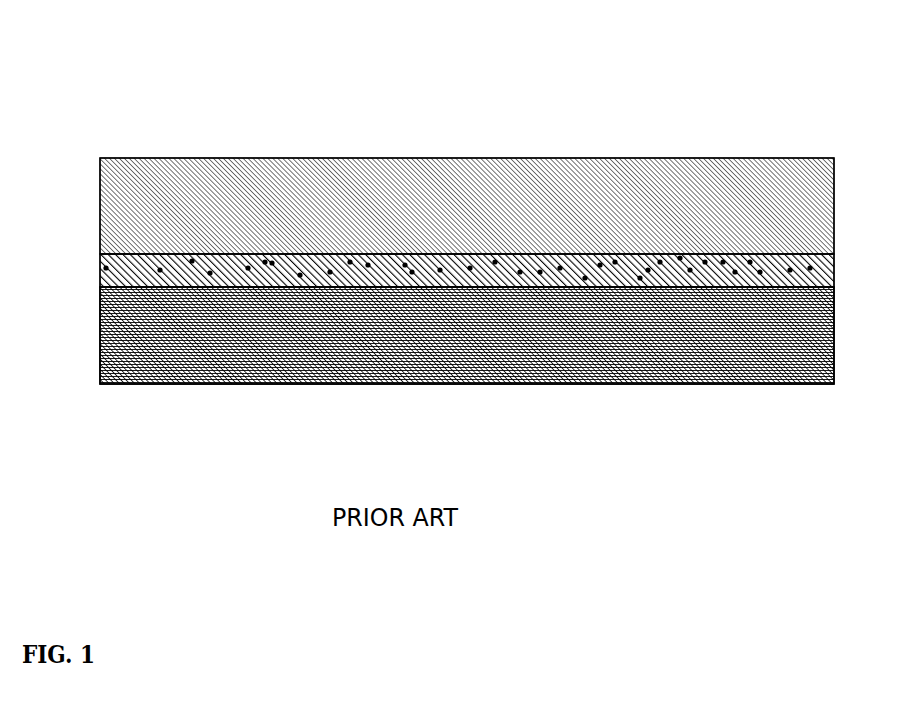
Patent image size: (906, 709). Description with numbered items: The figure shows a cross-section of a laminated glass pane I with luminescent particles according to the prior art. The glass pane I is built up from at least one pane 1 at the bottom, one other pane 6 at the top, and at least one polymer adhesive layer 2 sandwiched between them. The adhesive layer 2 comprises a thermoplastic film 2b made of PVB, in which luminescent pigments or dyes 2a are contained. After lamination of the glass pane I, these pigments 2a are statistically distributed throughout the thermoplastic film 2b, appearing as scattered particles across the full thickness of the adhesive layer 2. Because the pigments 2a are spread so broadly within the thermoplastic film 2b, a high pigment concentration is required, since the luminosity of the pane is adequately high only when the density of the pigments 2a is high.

The glass pane I is at (426, 134).
The other pane 6 is at (322, 140).
The polymer adhesive layer 2 is at (482, 270).
The luminescent pigments or dyes 2a is at (99, 254).
The thermoplastic film 2b is at (99, 287).
The pane 1 is at (501, 393).